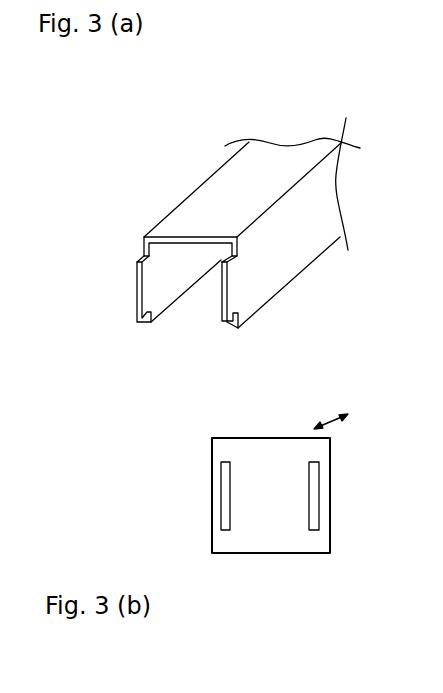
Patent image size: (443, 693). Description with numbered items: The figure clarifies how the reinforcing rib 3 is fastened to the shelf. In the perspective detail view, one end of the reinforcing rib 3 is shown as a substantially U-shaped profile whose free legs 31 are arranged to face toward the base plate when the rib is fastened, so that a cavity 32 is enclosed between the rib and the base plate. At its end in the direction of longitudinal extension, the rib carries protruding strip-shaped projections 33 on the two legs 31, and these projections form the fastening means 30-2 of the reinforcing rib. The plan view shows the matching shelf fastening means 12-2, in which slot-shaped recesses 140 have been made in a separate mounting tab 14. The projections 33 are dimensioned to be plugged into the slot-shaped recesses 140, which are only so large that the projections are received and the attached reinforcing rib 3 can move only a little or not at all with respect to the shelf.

The reinforcing rib 3 is at (249, 215).
The fastening means 30-2 is at (184, 234).
The strip-shaped projections 33 is at (137, 262).
The cavity 32 is at (197, 298).
The free legs 31 is at (275, 258).
The mounting tab 14 is at (226, 458).
The slot-shaped recesses 140 is at (222, 475).
The shelf fastening means 12-2 is at (355, 459).